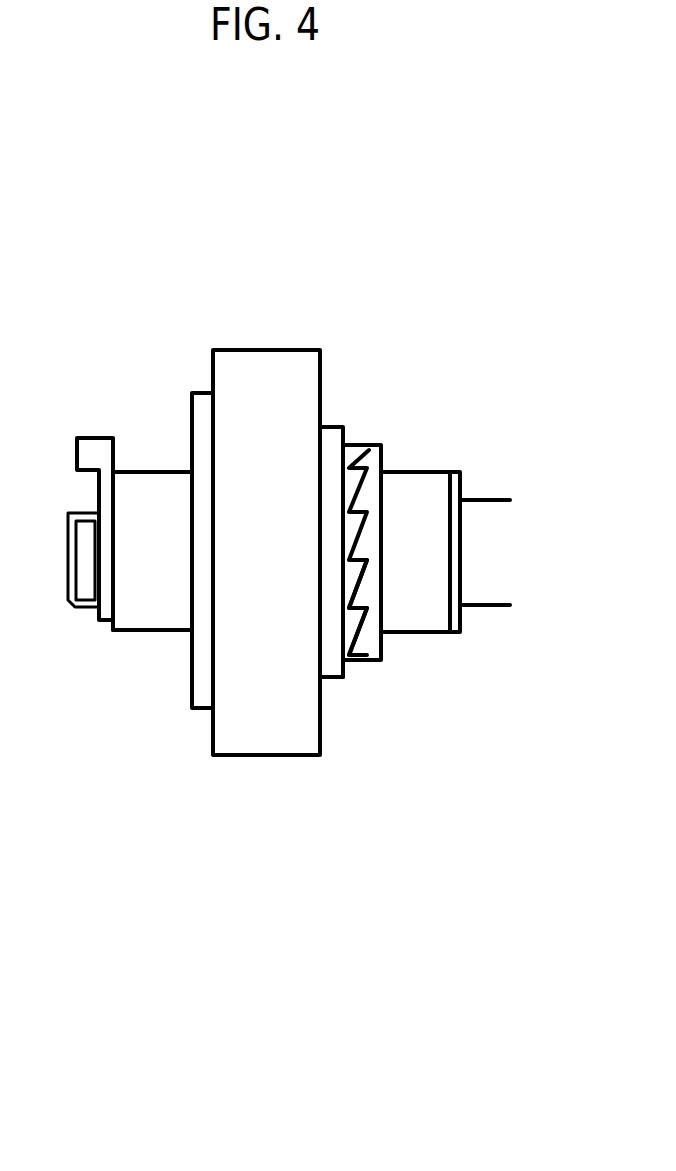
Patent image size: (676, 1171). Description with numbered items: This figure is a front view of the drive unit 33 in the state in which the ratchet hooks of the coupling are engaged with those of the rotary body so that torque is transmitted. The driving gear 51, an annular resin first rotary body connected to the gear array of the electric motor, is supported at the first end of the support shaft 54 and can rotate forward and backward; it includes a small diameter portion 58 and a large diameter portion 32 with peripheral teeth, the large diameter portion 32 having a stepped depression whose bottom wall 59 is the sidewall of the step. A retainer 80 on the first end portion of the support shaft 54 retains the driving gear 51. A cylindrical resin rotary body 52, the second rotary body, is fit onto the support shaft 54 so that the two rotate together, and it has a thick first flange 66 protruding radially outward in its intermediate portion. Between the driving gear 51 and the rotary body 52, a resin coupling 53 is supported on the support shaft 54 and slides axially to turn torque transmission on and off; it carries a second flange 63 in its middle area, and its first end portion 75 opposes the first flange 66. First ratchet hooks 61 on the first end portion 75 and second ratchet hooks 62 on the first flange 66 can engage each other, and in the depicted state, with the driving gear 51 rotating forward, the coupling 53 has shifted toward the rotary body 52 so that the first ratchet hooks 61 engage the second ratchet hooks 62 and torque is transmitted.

The large diameter portion 32 is at (268, 368).
The drive unit 33 is at (208, 897).
The driving gear 51 is at (163, 737).
The rotary body 52 is at (421, 436).
The coupling 53 is at (354, 413).
The support shaft 54 is at (495, 498).
The small diameter portion 58 is at (155, 487).
The bottom wall 59 is at (208, 393).
The first ratchet hooks 61 is at (350, 570).
The second ratchet hooks 62 is at (357, 593).
The second flange 63 is at (331, 425).
The first flange 66 is at (369, 447).
The first end portion 75 is at (330, 662).
The retainer 80 is at (97, 432).